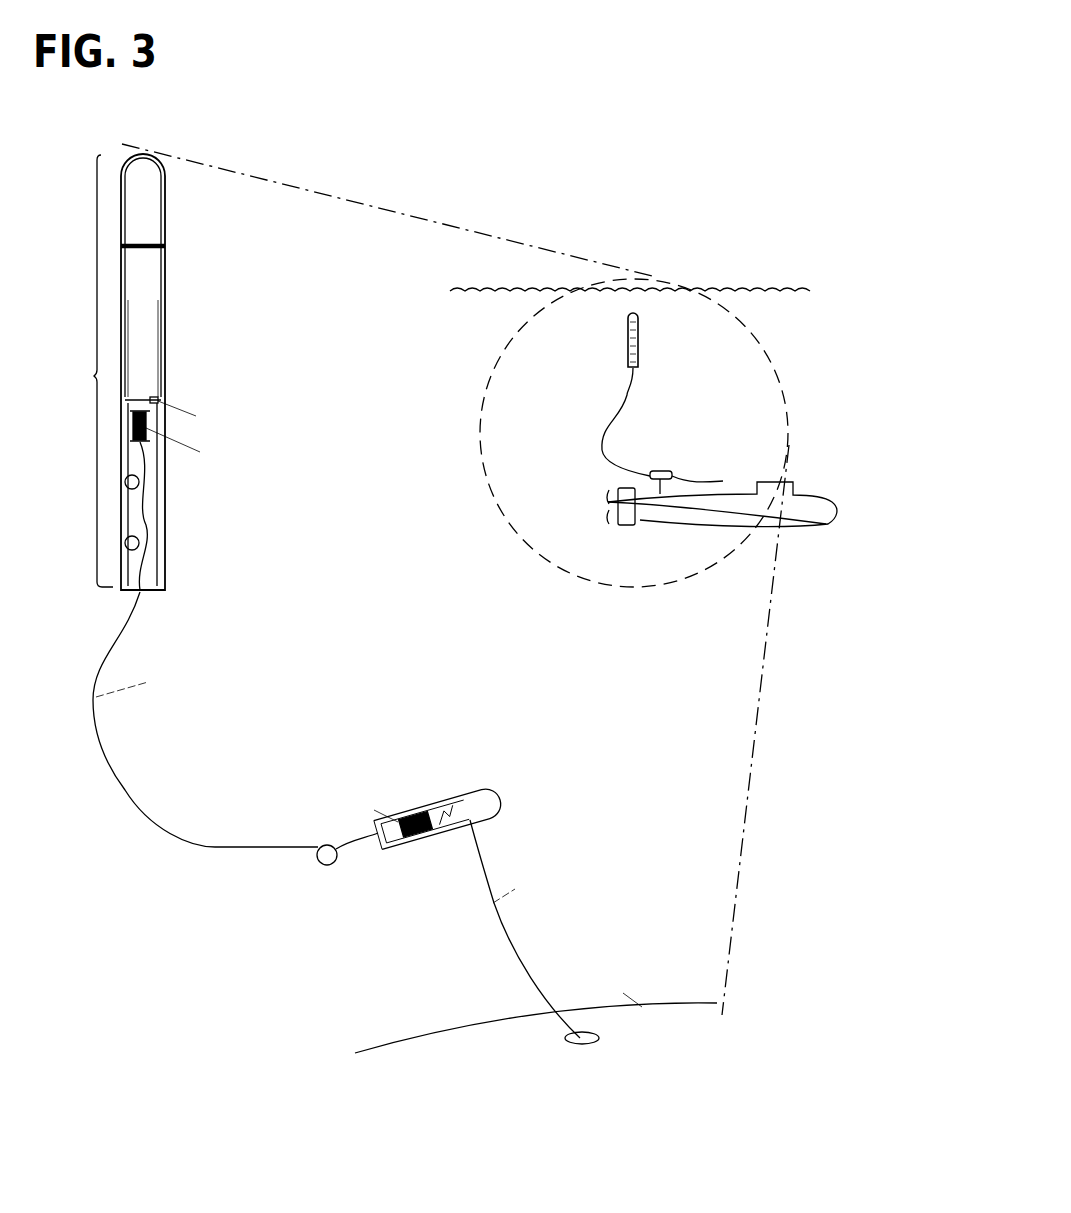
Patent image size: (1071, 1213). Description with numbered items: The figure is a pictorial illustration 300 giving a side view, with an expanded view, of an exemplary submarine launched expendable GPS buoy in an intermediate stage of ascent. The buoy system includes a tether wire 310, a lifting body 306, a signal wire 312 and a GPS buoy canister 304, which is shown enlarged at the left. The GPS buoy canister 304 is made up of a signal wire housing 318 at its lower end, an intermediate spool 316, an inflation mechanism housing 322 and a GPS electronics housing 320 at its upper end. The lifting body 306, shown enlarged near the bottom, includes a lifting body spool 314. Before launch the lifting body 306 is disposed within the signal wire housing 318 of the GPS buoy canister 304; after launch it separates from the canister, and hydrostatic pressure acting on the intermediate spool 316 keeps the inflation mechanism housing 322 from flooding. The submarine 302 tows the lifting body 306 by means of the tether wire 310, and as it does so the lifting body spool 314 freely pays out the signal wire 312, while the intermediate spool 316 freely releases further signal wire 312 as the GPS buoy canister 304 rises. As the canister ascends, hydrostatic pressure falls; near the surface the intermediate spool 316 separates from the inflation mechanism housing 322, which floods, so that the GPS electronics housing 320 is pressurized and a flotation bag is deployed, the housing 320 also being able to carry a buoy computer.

The pictorial illustration 300 is at (870, 87).
The submarine 302 is at (815, 519).
The GPS buoy canister 304 is at (94, 376).
The lifting body 306 is at (495, 805).
The tether wire 310 is at (518, 958).
The signal wire 312 is at (123, 784).
The lifting body spool 314 is at (418, 820).
The intermediate spool 316 is at (146, 434).
The signal wire housing 318 is at (153, 546).
The GPS electronics housing 320 is at (148, 226).
The inflation mechanism housing 322 is at (146, 338).